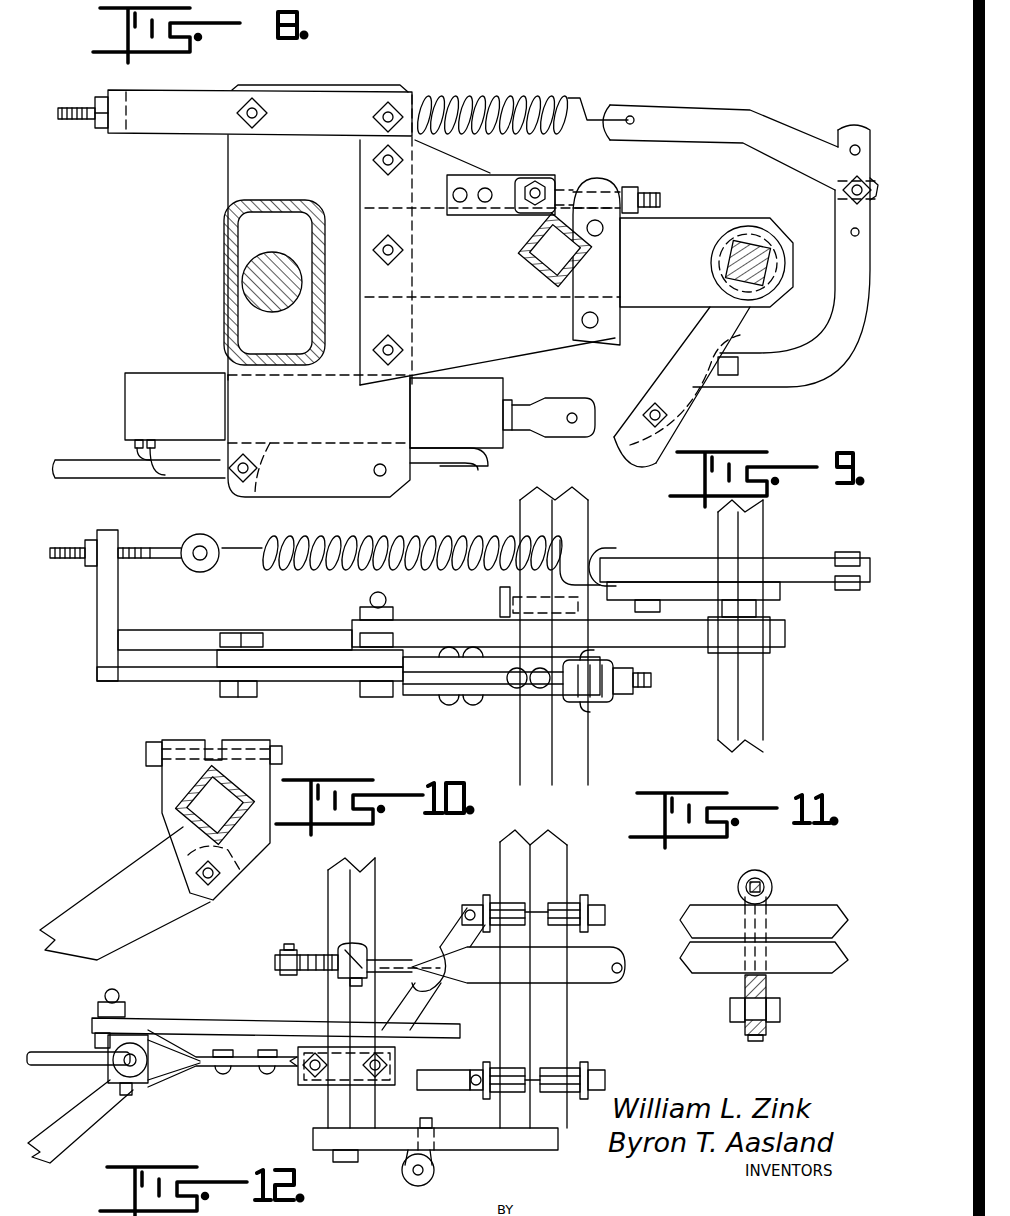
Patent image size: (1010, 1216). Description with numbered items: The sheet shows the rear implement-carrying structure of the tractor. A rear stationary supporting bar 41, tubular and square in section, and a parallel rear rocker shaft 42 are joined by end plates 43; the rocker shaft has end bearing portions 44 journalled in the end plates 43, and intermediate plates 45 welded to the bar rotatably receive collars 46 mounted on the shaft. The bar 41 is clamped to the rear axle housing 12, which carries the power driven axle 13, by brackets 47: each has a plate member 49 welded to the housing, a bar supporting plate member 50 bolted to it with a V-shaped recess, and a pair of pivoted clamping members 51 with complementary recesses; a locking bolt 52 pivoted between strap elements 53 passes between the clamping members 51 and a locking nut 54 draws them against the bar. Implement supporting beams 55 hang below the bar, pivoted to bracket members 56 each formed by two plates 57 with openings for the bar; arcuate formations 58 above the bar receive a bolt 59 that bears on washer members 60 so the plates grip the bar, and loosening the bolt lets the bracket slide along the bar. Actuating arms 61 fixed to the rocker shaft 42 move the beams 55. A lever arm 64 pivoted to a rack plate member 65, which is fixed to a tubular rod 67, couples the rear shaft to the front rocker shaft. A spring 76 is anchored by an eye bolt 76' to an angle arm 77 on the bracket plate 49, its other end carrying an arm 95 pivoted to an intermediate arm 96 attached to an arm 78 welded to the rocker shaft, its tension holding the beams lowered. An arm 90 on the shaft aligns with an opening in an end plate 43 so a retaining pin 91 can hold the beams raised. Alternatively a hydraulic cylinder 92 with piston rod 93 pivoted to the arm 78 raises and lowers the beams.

In FIG. 8, the rear axle housing 12 is at (225, 262).
In FIG. 8, the power driven axle 13 is at (265, 310).
In FIG. 8, the rear stationary supporting bar 41 is at (528, 262).
In FIG. 9, the rear stationary supporting bar 41 is at (590, 748).
In FIG. 10, the rear stationary supporting bar 41 is at (185, 830).
In FIG. 11, the rear stationary supporting bar 41 is at (822, 905).
In FIG. 8, the rear rocker shaft 42 is at (765, 240).
In FIG. 9, the rear rocker shaft 42 is at (765, 702).
In FIG. 10, the rear rocker shaft 42 is at (376, 890).
In FIG. 10, the end plates 43 is at (480, 1150).
In FIG. 10, the end bearing portions 44 is at (350, 1162).
In FIG. 8, the intermediate plates 45 is at (705, 218).
In FIG. 9, the intermediate plates 45 is at (788, 640).
In FIG. 8, the collars 46 is at (778, 282).
In FIG. 9, the collars 46 is at (775, 650).
In FIG. 8, the brackets 47 is at (549, 361).
In FIG. 9, the brackets 47 is at (464, 718).
In FIG. 8, the plate member 49 is at (225, 168).
In FIG. 9, the plate member 49 is at (217, 657).
In FIG. 8, the bar supporting plate member 50 is at (495, 336).
In FIG. 9, the bar supporting plate member 50 is at (412, 695).
In FIG. 8, the clamping members 51 is at (622, 258).
In FIG. 9, the clamping members 51 is at (605, 655).
In FIG. 8, the locking bolt 52 is at (652, 195).
In FIG. 9, the locking bolt 52 is at (650, 688).
In FIG. 8, the strap elements 53 is at (470, 175).
In FIG. 8, the locking nut 54 is at (630, 187).
In FIG. 9, the locking nut 54 is at (640, 678).
In FIG. 10, the implement supporting beams 55 is at (168, 925).
In FIG. 12, the implement supporting beams 55 is at (98, 1118).
In FIG. 11, the implement supporting beams 55 is at (755, 1042).
In FIG. 10, the bracket members 56 is at (150, 818).
In FIG. 11, the bracket members 56 is at (780, 880).
In FIG. 10, the plates 57 is at (248, 850).
In FIG. 11, the plates 57 is at (745, 985).
In FIG. 10, the arcuate formations 58 is at (172, 740).
In FIG. 11, the arcuate formations 58 is at (750, 875).
In FIG. 10, the bolt 59 is at (282, 755).
In FIG. 11, the bolt 59 is at (766, 888).
In FIG. 10, the washer members 60 is at (262, 752).
In FIG. 11, the washer members 60 is at (738, 887).
In FIG. 12, the actuating arms 61 is at (253, 1086).
In FIG. 10, the lever arm 64 is at (338, 975).
In FIG. 10, the plate member 65 is at (272, 963).
In FIG. 10, the tubular rod 67 is at (600, 950).
In FIG. 8, the spring 76 is at (524, 98).
In FIG. 9, the spring 76 is at (390, 547).
In FIG. 8, the eye bolt 76' is at (81, 126).
In FIG. 9, the eye bolt 76' is at (115, 538).
In FIG. 8, the angle arm 77 is at (182, 82).
In FIG. 9, the angle arm 77 is at (97, 625).
In FIG. 8, the arm 78 is at (690, 412).
In FIG. 9, the arm 78 is at (682, 598).
In FIG. 10, the arm 90 is at (385, 1128).
In FIG. 10, the retaining pin 91 is at (430, 1184).
In FIG. 8, the cylinder 92 is at (172, 365).
In FIG. 8, the piston rod 93 is at (522, 430).
In FIG. 8, the arm 95 is at (725, 105).
In FIG. 9, the arm 95 is at (782, 560).
In FIG. 8, the intermediate arm 96 is at (845, 352).
In FIG. 9, the intermediate arm 96 is at (795, 585).